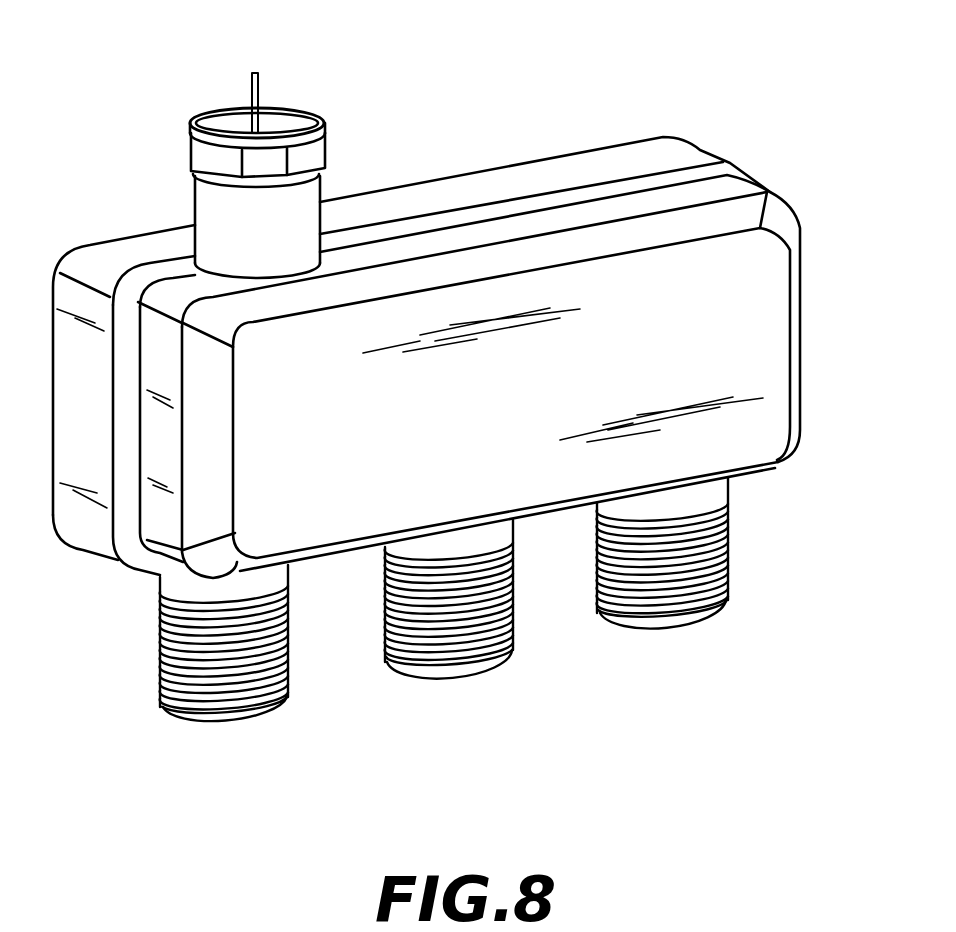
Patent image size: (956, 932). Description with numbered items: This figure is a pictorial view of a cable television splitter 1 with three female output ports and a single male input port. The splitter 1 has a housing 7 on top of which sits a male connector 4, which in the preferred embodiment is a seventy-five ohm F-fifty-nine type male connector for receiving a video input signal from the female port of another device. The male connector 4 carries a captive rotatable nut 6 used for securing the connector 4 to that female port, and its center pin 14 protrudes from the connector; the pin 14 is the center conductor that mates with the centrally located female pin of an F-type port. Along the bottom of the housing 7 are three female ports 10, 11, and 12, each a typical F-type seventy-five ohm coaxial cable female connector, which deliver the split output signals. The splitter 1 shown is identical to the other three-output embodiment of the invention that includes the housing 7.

The splitter 1 is at (583, 103).
The male connector 4 is at (287, 104).
The captive rotatable nut 6 is at (303, 155).
The housing 7 is at (706, 147).
The female port 10 is at (160, 682).
The female port 11 is at (513, 625).
The female port 12 is at (728, 562).
The center pin 14 is at (253, 88).